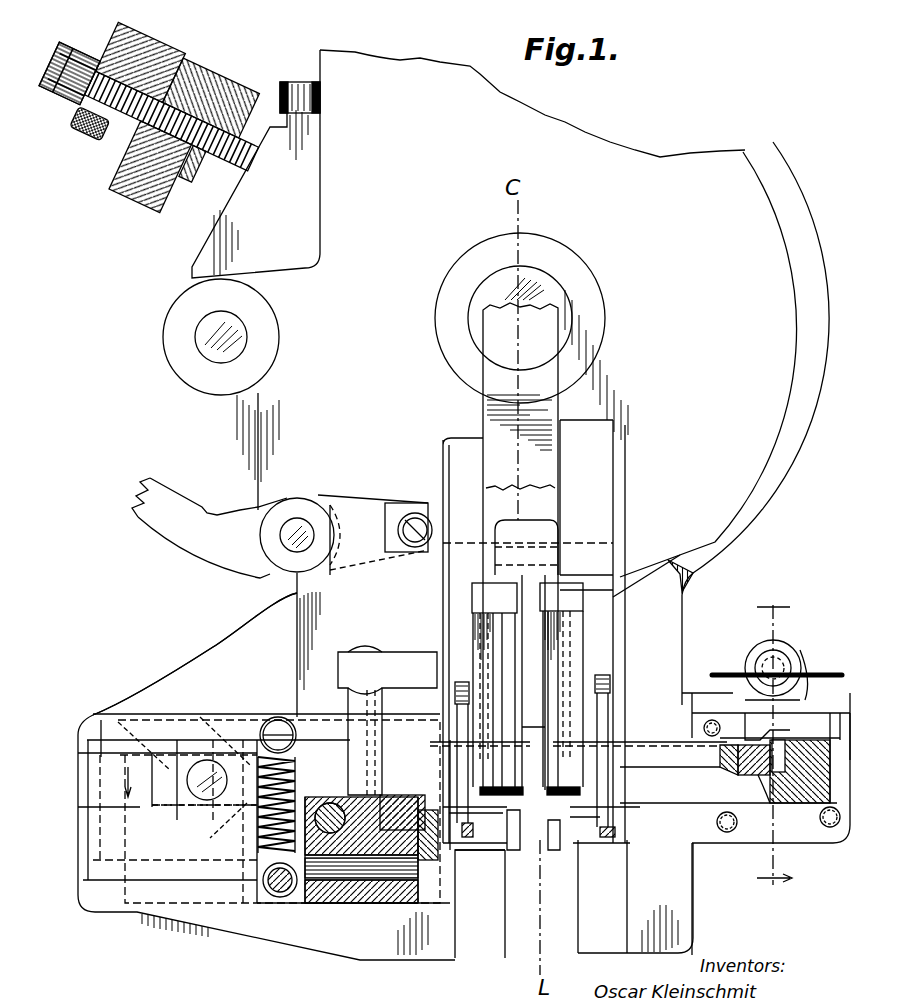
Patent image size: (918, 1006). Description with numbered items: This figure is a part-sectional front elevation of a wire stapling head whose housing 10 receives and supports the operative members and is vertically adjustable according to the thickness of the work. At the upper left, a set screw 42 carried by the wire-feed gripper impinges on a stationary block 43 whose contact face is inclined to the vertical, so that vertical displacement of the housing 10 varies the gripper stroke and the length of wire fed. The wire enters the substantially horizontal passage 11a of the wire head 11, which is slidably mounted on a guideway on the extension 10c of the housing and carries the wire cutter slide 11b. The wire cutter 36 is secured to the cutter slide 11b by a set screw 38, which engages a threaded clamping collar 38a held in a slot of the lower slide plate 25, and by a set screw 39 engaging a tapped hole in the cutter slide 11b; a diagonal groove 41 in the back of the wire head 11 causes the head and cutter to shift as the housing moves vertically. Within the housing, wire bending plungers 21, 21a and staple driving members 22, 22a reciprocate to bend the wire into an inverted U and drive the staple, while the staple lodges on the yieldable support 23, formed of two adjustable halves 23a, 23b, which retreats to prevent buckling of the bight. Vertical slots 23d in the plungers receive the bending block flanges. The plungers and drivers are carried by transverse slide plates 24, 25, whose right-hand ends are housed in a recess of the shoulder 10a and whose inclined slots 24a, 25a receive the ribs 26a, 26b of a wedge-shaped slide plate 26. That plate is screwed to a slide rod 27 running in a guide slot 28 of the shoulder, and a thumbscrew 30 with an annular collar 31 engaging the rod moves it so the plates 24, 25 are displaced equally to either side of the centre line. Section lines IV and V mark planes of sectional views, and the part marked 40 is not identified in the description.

The housing 10 is at (760, 490).
The shoulder 10a is at (808, 830).
The extension 10c is at (188, 714).
The wire head 11 is at (193, 932).
The passage 11a is at (328, 905).
The wire cutter slide 11b is at (101, 720).
The wire bending plunger 21 is at (450, 498).
The wire bending plunger 21a is at (600, 578).
The staple driving member 22 is at (472, 592).
The staple driving member 22a is at (575, 583).
The yieldable staple support 23 is at (540, 523).
The half of staple supporting member 23a is at (513, 840).
The half of staple supporting member 23b is at (562, 840).
The vertical slots 23d is at (640, 660).
The slide plate 24 is at (653, 750).
The transverse slot 24a is at (705, 685).
The slide plate 25 is at (803, 790).
The transverse slot 25a is at (847, 690).
The wedge-shaped slide plate 26 is at (826, 685).
The rib or slide 26a is at (740, 752).
The rib or slide 26b is at (762, 770).
The slide rod 27 is at (775, 660).
The guide slot 28 is at (800, 665).
The thumbscrew 30 is at (755, 652).
The annular flange or collar 31 is at (790, 650).
The wire cutter 36 is at (457, 867).
The set screw 38 is at (215, 748).
The threaded clamping collar 38a is at (195, 812).
The set screw 39 is at (322, 808).
The slide 40 is at (168, 800).
The diagonal groove 41 is at (232, 818).
The set screw 42 is at (268, 126).
The stationary block 43 is at (227, 250).
The section line IV is at (480, 761).
The section line V is at (774, 751).